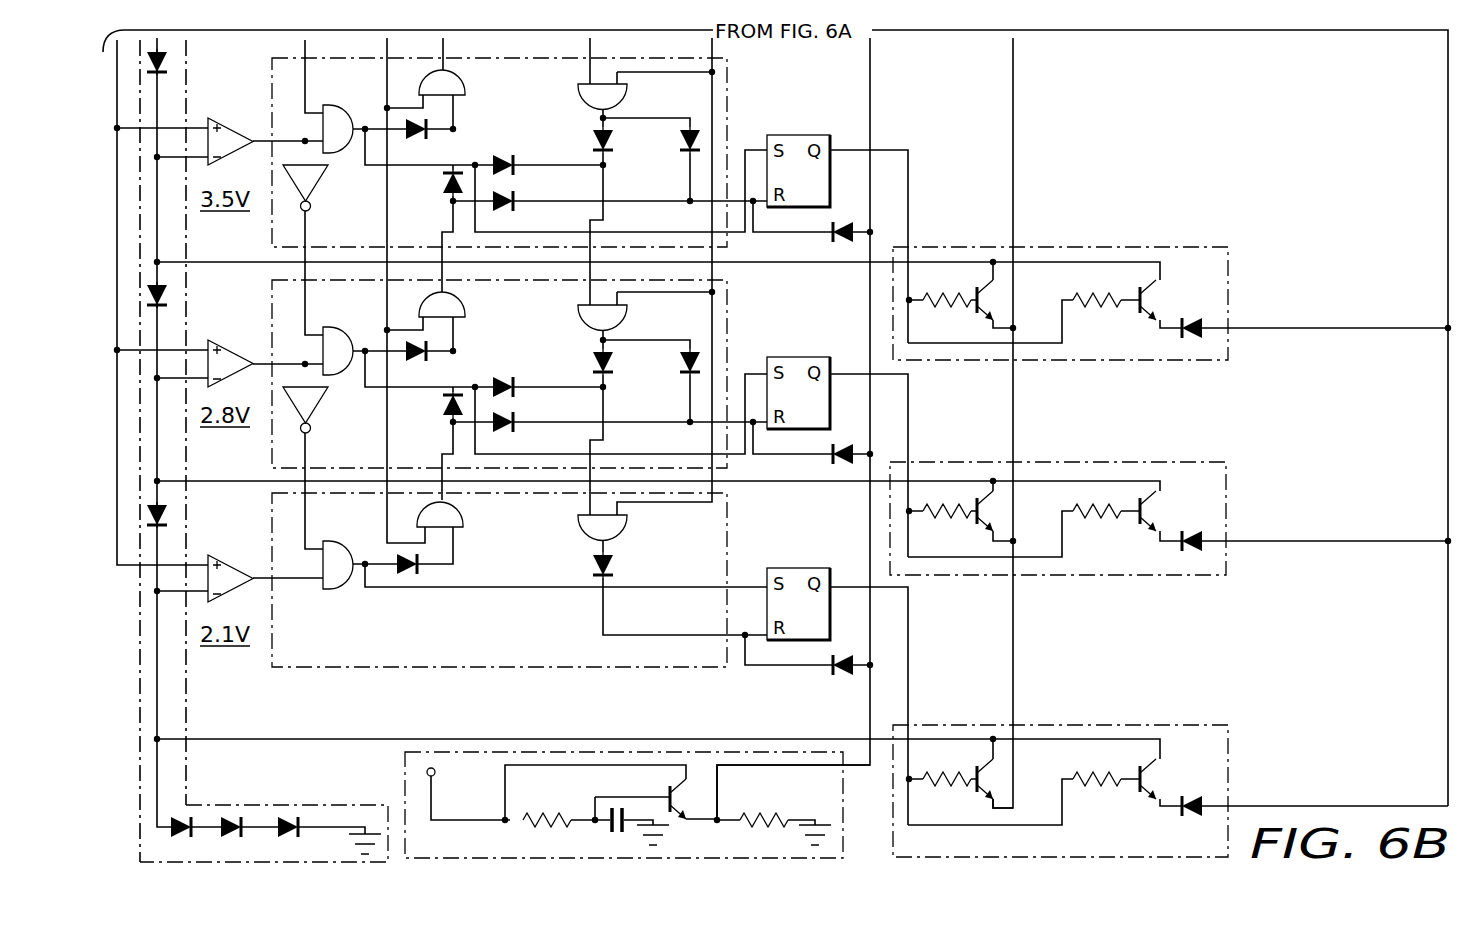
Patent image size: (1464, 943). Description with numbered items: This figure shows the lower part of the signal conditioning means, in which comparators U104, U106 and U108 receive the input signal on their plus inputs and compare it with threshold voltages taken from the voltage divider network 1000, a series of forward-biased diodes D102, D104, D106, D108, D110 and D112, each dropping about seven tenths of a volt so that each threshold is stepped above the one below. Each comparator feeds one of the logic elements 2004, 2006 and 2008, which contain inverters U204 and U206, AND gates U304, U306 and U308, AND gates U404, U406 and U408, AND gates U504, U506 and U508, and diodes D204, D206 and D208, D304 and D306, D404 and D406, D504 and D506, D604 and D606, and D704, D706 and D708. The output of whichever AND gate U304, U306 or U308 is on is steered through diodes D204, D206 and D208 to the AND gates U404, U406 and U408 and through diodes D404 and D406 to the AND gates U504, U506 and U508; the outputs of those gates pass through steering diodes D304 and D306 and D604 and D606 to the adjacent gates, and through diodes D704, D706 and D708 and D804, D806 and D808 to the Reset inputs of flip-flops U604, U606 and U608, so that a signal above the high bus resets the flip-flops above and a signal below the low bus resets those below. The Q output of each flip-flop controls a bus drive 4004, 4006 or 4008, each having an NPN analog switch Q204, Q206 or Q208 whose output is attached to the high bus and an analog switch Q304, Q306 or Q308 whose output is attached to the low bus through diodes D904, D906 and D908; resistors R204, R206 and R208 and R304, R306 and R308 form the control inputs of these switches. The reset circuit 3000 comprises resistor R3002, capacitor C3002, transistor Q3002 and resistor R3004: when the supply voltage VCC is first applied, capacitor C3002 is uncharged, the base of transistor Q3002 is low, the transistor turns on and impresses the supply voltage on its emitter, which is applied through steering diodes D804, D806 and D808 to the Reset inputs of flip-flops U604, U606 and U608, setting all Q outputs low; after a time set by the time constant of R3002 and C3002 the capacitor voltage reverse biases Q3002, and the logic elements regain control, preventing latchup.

The logic element 2004 is at (270, 62).
The logic element 2006 is at (270, 292).
The logic element 2008 is at (270, 506).
The voltage divider network 1000 is at (233, 805).
The reset circuit 3000 is at (405, 797).
The bus drive 4004 is at (1180, 227).
The bus drive 4006 is at (1145, 462).
The bus drive 4008 is at (1130, 725).
The diode D102 is at (165, 60).
The diode D104 is at (165, 292).
The diode D106 is at (165, 512).
The diode D108 is at (176, 841).
The diode D110 is at (247, 841).
The diode D112 is at (306, 841).
The comparator U104 is at (224, 126).
The comparator U106 is at (224, 351).
The comparator U108 is at (224, 565).
The inverter U204 is at (329, 192).
The inverter U206 is at (329, 419).
The AND gate U304 is at (341, 115).
The AND gate U306 is at (341, 338).
The AND gate U308 is at (341, 550).
The AND gate U404 is at (471, 77).
The AND gate U406 is at (471, 300).
The AND gate U408 is at (470, 510).
The AND gate U504 is at (573, 94).
The AND gate U506 is at (572, 316).
The AND gate U508 is at (569, 529).
The flip-flop U604 is at (797, 157).
The flip-flop U606 is at (797, 379).
The flip-flop U608 is at (797, 591).
The steering diode D204 is at (419, 142).
The steering diode D206 is at (419, 364).
The steering diode D208 is at (438, 572).
The steering diode D304 is at (426, 195).
The steering diode D306 is at (426, 417).
The steering diode D404 is at (536, 173).
The steering diode D406 is at (536, 395).
The diode D504 is at (536, 210).
The diode D506 is at (536, 431).
The steering diode D604 is at (568, 138).
The steering diode D606 is at (566, 358).
The steering diode D704 is at (661, 152).
The steering diode D706 is at (663, 375).
The steering diode D708 is at (568, 569).
The steering diode D804 is at (810, 241).
The steering diode D806 is at (811, 462).
The steering diode D808 is at (809, 675).
The analog switch Q204 is at (953, 293).
The analog switch Q206 is at (953, 504).
The analog switch Q208 is at (954, 771).
The analog switch Q304 is at (1115, 292).
The analog switch Q306 is at (1112, 504).
The analog switch Q308 is at (1116, 771).
The resistor R204 is at (942, 313).
The resistor R206 is at (942, 525).
The resistor R208 is at (943, 793).
The resistor R304 is at (1098, 313).
The resistor R306 is at (1096, 525).
The resistor R308 is at (1096, 793).
The diode D904 is at (1159, 339).
The diode D906 is at (1156, 552).
The diode D908 is at (1166, 821).
The supply voltage VCC is at (453, 774).
The resistor R3002 is at (548, 807).
The capacitor C3002 is at (586, 832).
The transistor Q3002 is at (635, 796).
The resistor R3004 is at (750, 835).